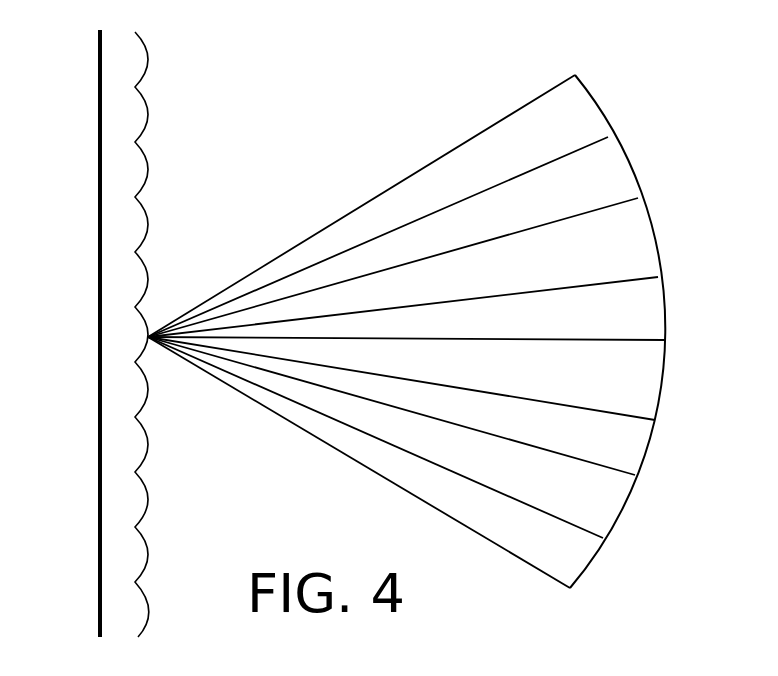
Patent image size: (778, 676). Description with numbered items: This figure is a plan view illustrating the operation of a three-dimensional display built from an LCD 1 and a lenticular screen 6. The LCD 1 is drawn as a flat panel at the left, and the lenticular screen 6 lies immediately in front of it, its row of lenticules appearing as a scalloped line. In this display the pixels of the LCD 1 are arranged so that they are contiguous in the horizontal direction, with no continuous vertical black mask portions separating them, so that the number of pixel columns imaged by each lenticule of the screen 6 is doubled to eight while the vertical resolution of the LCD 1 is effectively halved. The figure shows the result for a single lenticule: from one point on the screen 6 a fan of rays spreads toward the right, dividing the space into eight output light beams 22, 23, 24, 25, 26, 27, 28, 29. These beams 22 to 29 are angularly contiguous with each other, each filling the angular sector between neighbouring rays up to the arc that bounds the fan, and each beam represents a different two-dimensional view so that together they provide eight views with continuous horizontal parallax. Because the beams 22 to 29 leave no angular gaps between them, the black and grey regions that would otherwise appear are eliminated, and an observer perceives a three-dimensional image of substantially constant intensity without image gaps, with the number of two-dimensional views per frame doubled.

The LCD 1 is at (100, 53).
The lenticular screen 6 is at (120, 68).
The output light beam 22 is at (570, 553).
The output light beam 23 is at (605, 502).
The output light beam 24 is at (622, 447).
The output light beam 25 is at (637, 377).
The output light beam 26 is at (637, 310).
The output light beam 27 is at (618, 242).
The output light beam 28 is at (594, 174).
The output light beam 29 is at (560, 117).